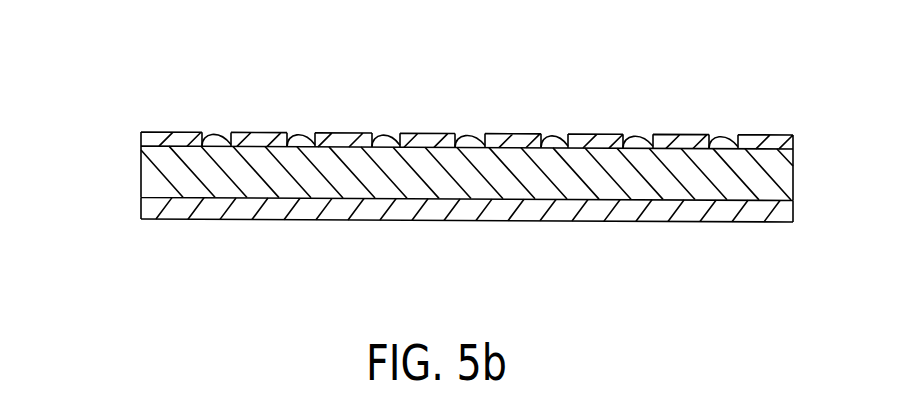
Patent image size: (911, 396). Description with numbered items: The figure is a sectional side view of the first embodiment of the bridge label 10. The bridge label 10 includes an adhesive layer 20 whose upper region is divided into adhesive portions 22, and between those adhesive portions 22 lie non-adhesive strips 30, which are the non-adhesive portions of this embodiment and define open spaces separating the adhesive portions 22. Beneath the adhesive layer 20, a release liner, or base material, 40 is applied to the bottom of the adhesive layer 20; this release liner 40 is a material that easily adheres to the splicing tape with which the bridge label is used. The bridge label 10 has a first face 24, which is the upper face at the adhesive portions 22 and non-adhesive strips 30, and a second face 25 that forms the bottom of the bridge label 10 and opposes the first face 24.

The bridge label 10 is at (450, 184).
The adhesive layer 20 is at (778, 167).
The adhesive portions 22 is at (386, 131).
The first face 24 is at (600, 128).
The second face 25 is at (310, 236).
The non-adhesive strips 30 is at (467, 100).
The release liner 40 is at (783, 208).